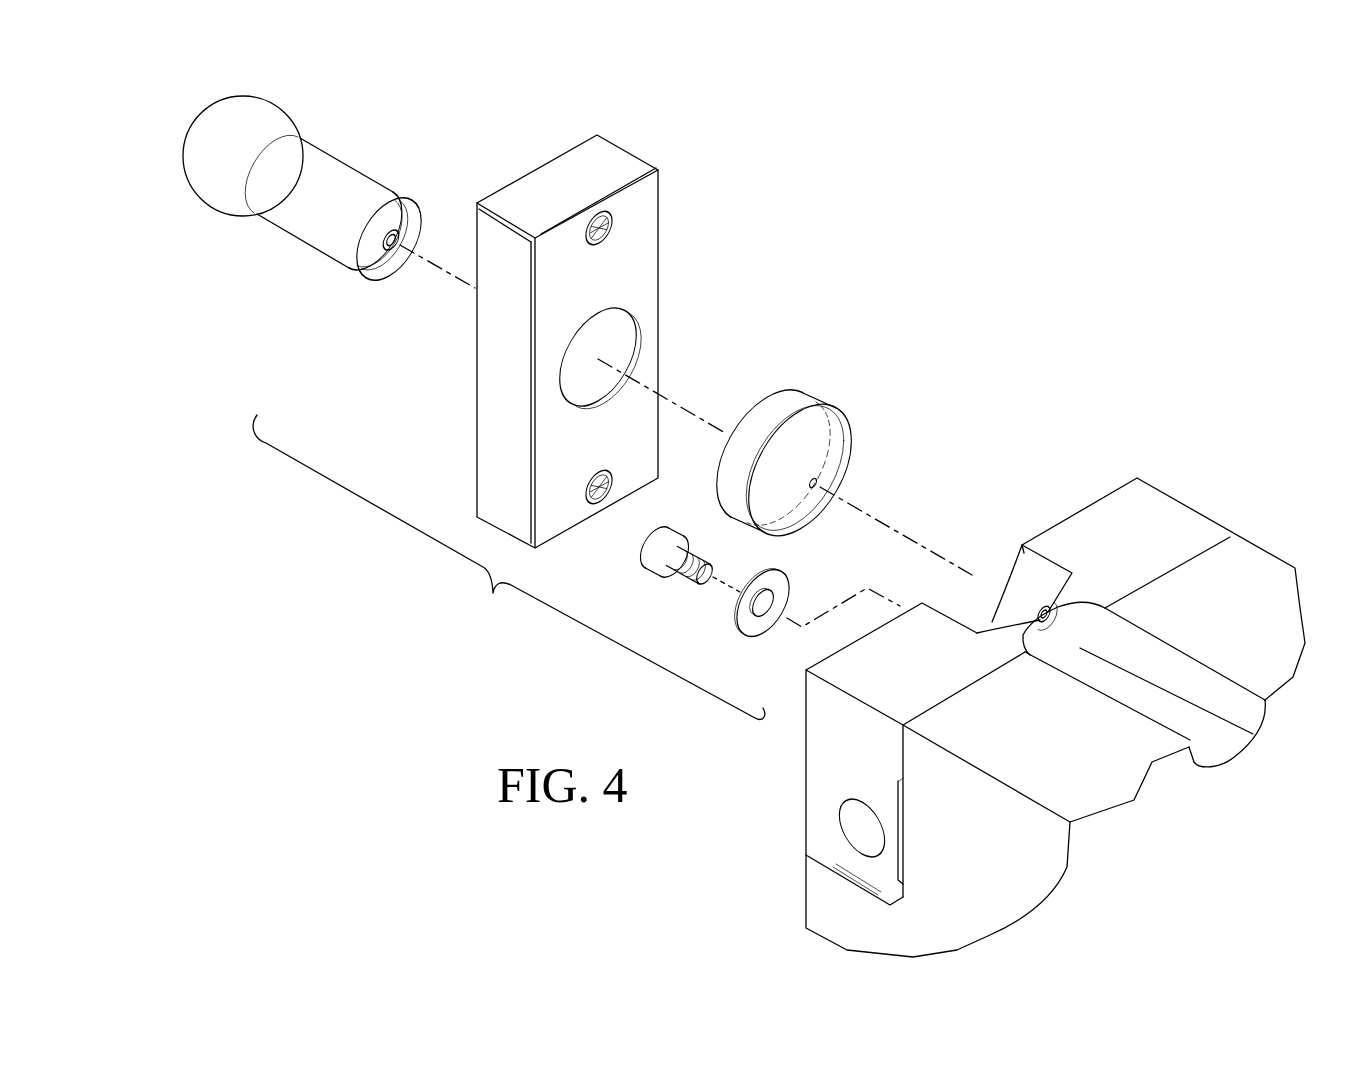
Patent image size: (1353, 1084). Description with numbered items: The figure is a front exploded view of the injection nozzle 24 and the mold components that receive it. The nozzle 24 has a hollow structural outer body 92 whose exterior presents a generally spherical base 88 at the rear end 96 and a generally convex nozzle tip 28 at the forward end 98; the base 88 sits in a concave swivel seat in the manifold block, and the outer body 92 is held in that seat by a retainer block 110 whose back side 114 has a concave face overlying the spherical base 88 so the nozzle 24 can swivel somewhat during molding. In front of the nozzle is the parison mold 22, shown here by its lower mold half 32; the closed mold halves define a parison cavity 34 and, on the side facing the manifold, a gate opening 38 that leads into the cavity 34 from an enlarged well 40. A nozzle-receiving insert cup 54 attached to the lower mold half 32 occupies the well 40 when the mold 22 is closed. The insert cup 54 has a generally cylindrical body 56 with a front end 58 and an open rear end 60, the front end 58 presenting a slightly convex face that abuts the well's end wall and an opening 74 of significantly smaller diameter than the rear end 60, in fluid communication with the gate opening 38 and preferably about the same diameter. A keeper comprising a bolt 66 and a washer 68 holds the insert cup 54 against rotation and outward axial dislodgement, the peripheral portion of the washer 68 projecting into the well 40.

The parison mold 22 is at (1190, 463).
The injection nozzle 24 is at (362, 138).
The nozzle tip 28 is at (373, 262).
The lower mold half 32 is at (1183, 537).
The parison cavity 34 is at (1250, 736).
The gate opening 38 is at (1045, 608).
The well 40 is at (998, 570).
The nozzle-receiving insert cup 54 is at (842, 360).
The body 56 is at (828, 410).
The front end 58 is at (828, 452).
The rear end 60 is at (755, 398).
The bolt 66 is at (652, 550).
The washer 68 is at (740, 615).
The opening 74 is at (818, 483).
The spherical base 88 is at (205, 170).
The structural outer body 92 is at (350, 186).
The rear end 96 is at (175, 122).
The forward end 98 is at (430, 170).
The retainer block 110 is at (633, 255).
The back side 114 is at (567, 152).